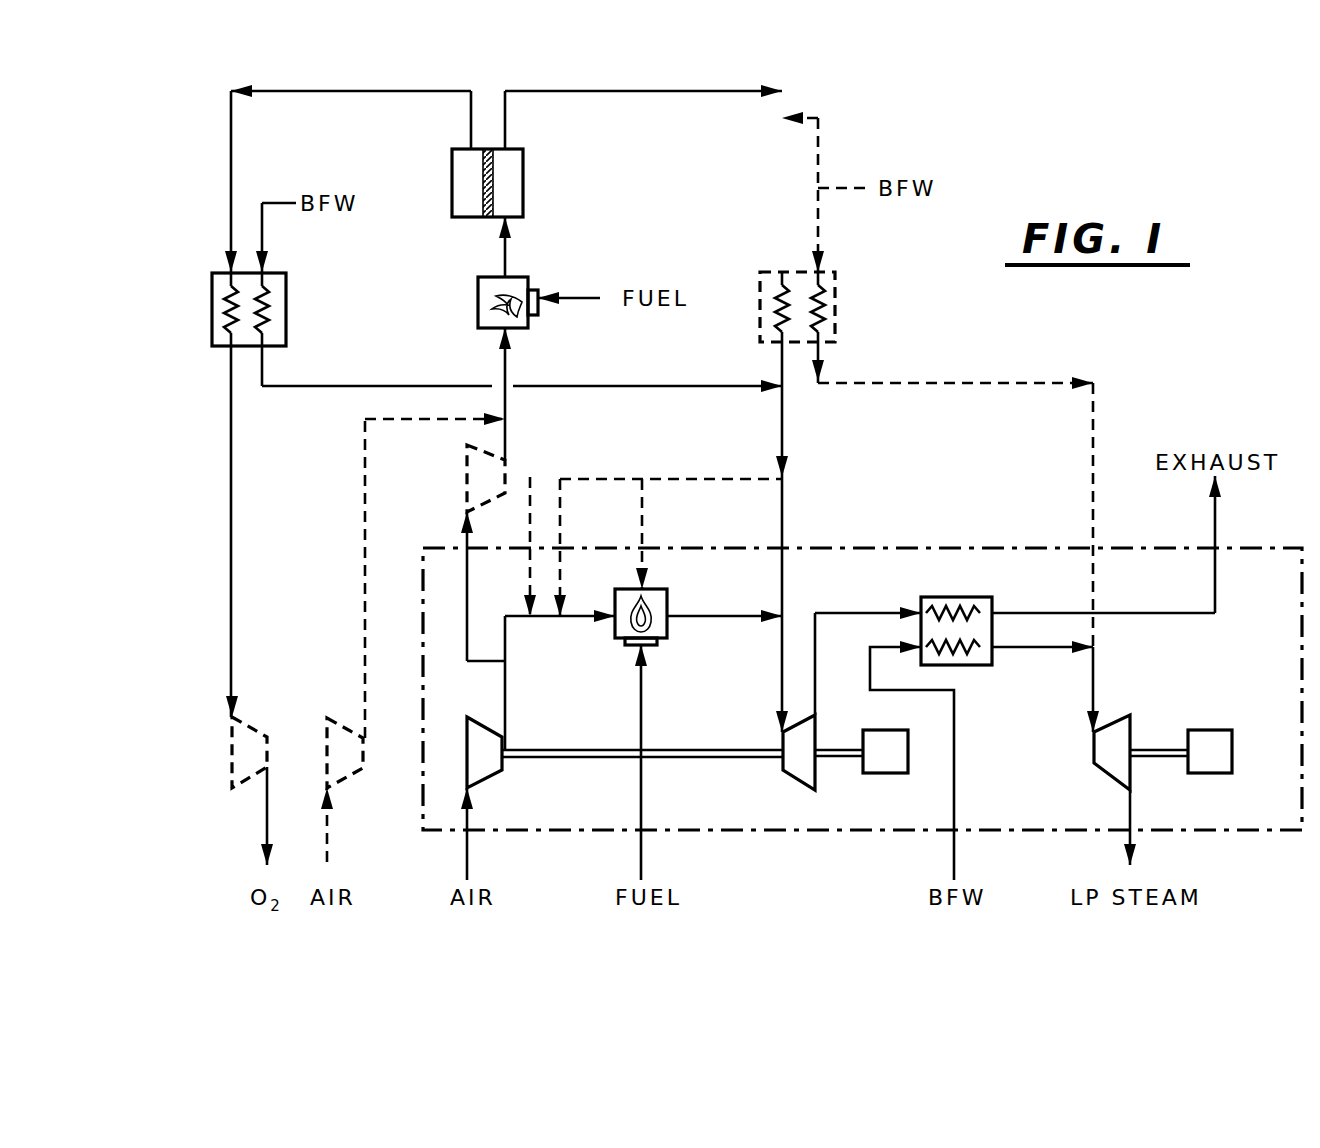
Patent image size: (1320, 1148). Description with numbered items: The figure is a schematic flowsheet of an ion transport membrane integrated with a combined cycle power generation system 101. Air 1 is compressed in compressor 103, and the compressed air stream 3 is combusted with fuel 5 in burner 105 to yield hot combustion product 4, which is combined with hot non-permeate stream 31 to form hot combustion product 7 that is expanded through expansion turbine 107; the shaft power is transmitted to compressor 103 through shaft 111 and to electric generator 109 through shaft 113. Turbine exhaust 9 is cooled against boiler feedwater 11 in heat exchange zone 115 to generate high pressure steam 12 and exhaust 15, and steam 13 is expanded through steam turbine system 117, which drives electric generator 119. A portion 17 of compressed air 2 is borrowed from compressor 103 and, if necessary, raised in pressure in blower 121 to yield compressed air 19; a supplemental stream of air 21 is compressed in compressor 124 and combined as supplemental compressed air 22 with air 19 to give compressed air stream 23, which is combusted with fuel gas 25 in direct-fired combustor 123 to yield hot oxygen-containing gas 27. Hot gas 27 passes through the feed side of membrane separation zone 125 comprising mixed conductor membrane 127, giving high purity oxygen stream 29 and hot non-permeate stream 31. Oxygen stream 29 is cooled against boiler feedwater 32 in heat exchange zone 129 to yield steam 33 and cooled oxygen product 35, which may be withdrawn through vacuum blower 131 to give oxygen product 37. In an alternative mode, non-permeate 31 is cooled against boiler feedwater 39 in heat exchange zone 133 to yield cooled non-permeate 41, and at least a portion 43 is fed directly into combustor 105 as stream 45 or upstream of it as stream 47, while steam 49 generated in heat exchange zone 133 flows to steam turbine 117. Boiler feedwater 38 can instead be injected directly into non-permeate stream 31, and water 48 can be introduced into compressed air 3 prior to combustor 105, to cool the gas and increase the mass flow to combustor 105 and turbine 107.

The air 1 is at (467, 845).
The compressed air 2 is at (505, 685).
The compressed air stream 3 is at (578, 616).
The hot combustion product 4 is at (730, 616).
The fuel 5 is at (641, 802).
The hot combustion product stream 7 is at (782, 684).
The turbine exhaust 9 is at (868, 613).
The boiler feedwater 11 is at (954, 730).
The high pressure steam 12 is at (1046, 647).
The steam 13 is at (1094, 685).
The exhaust 15 is at (1172, 613).
The portion of compressed air 17 is at (467, 602).
The compressed air 19 is at (505, 446).
The supplemental air 21 is at (326, 838).
The supplemental compressed air 22 is at (365, 508).
The compressed air stream 23 is at (507, 370).
The fuel gas 25 is at (570, 296).
The hot oxygen-containing gas 27 is at (500, 250).
The high purity oxygen stream 29 is at (387, 93).
The hot non-permeate stream 31 is at (679, 93).
The boiler feedwater 32 is at (262, 238).
The steam 33 is at (390, 386).
The cooled oxygen product 35 is at (231, 443).
The oxygen product 37 is at (267, 812).
The boiler feedwater 38 is at (818, 150).
The boiler feedwater 39 is at (818, 240).
The cooled non-permeate 41 is at (782, 444).
The portion of non-permeate 43 is at (715, 479).
The non-permeate stream to combustor 45 is at (642, 510).
The non-permeate stream upstream of combustor 47 is at (560, 510).
The water 48 is at (532, 504).
The steam 49 is at (818, 352).
The combined cycle power generation system 101 is at (917, 512).
The compressor 103 is at (485, 783).
The burner 105 is at (667, 630).
The expansion turbine 107 is at (805, 784).
The electric generator 109 is at (880, 773).
The shaft 111 is at (589, 750).
The shaft 113 is at (845, 750).
The heat exchange zone 115 is at (967, 597).
The steam turbine system 117 is at (1094, 765).
The electric generator 119 is at (1205, 730).
The blower 121 is at (467, 464).
The direct-fired combustor 123 is at (478, 305).
The compressor 124 is at (327, 738).
The membrane separation zone 125 is at (523, 183).
The mixed conductor membrane 127 is at (482, 172).
The heat exchange zone 129 is at (212, 292).
The vacuum blower 131 is at (230, 744).
The heat exchange zone 133 is at (835, 305).